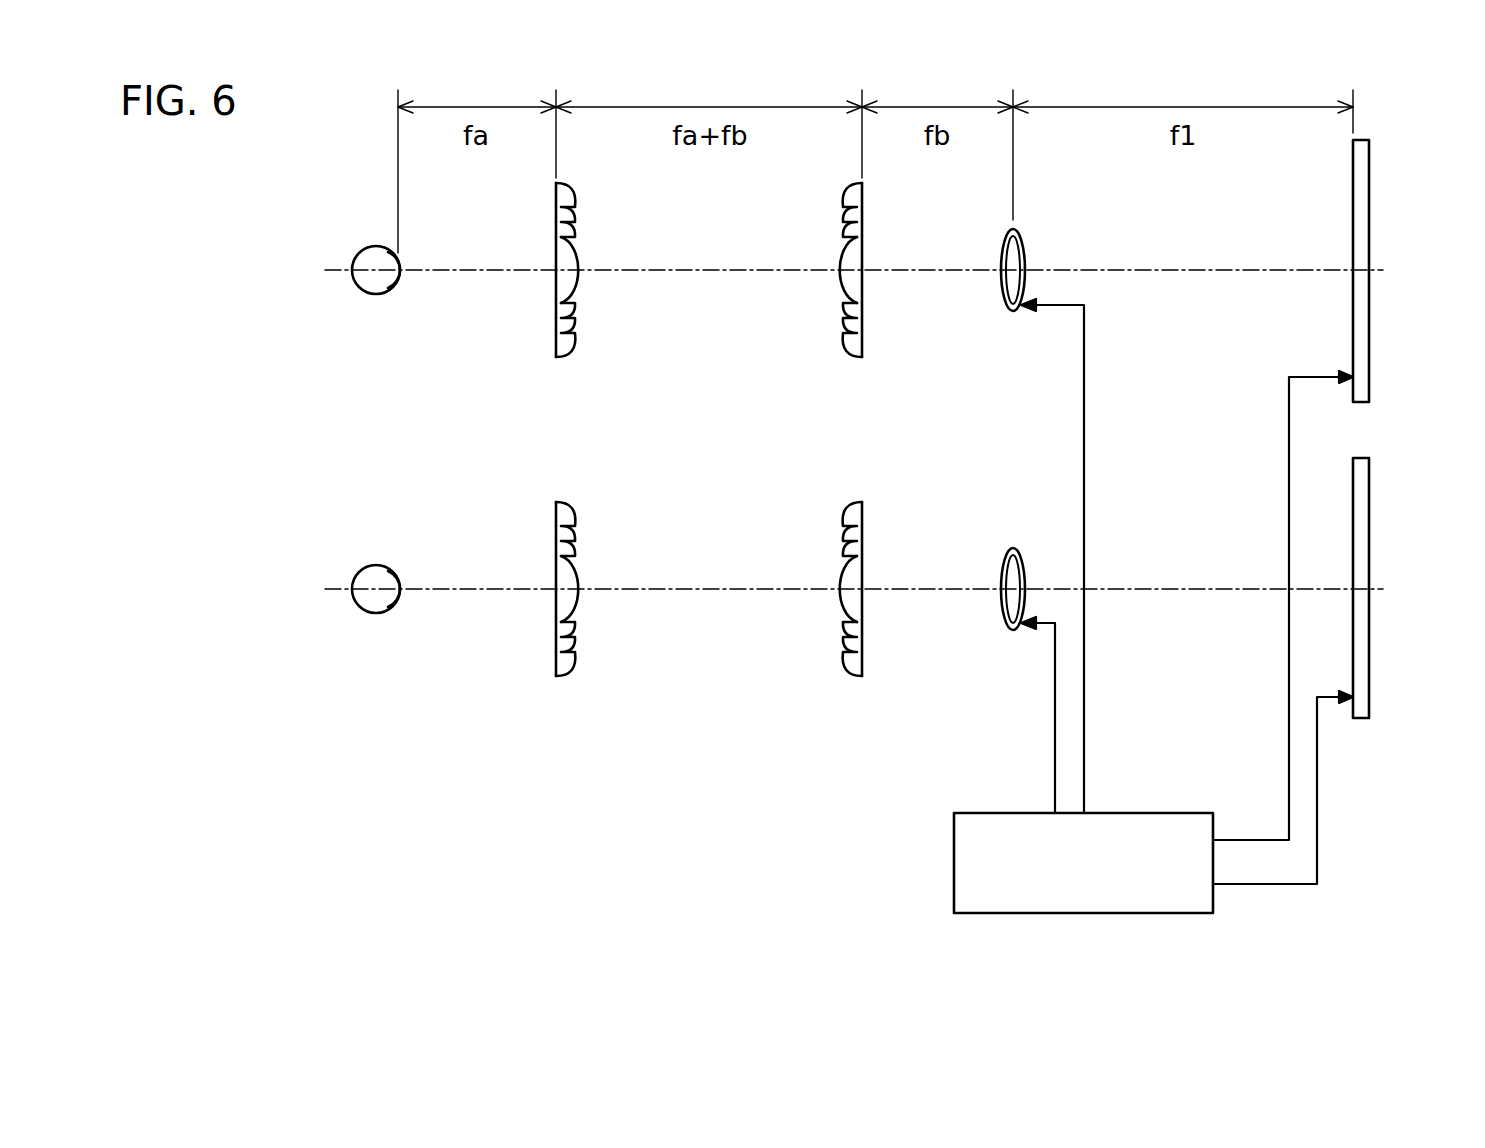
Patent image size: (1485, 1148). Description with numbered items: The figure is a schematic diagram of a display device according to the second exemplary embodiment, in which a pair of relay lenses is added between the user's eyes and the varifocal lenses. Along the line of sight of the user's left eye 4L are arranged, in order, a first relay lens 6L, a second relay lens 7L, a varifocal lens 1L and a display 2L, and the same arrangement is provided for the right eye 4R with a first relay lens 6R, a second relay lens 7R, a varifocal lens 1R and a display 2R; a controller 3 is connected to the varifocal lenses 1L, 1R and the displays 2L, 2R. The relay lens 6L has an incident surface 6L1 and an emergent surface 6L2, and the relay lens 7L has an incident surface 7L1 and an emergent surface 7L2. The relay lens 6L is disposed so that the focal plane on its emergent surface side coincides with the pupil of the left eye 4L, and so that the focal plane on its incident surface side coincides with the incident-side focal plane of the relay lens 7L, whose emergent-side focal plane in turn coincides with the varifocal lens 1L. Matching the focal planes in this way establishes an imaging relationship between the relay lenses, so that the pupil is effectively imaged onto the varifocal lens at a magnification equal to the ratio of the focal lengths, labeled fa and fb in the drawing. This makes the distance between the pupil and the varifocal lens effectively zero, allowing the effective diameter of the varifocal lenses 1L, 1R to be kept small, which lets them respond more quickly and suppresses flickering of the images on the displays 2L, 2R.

The varifocal lens 1L is at (1013, 312).
The varifocal lens 1R is at (1013, 547).
The display 2L is at (1371, 326).
The display 2R is at (1371, 648).
The controller 3 is at (954, 868).
The left eye 4L is at (362, 247).
The right eye 4R is at (365, 567).
The relay lens 6L is at (562, 270).
The incident surface 6L1 is at (578, 282).
The emergent surface 6L2 is at (558, 343).
The relay lens 6R is at (565, 634).
The relay lens 7L is at (853, 270).
The incident surface 7L1 is at (848, 292).
The emergent surface 7L2 is at (866, 228).
The relay lens 7R is at (857, 630).